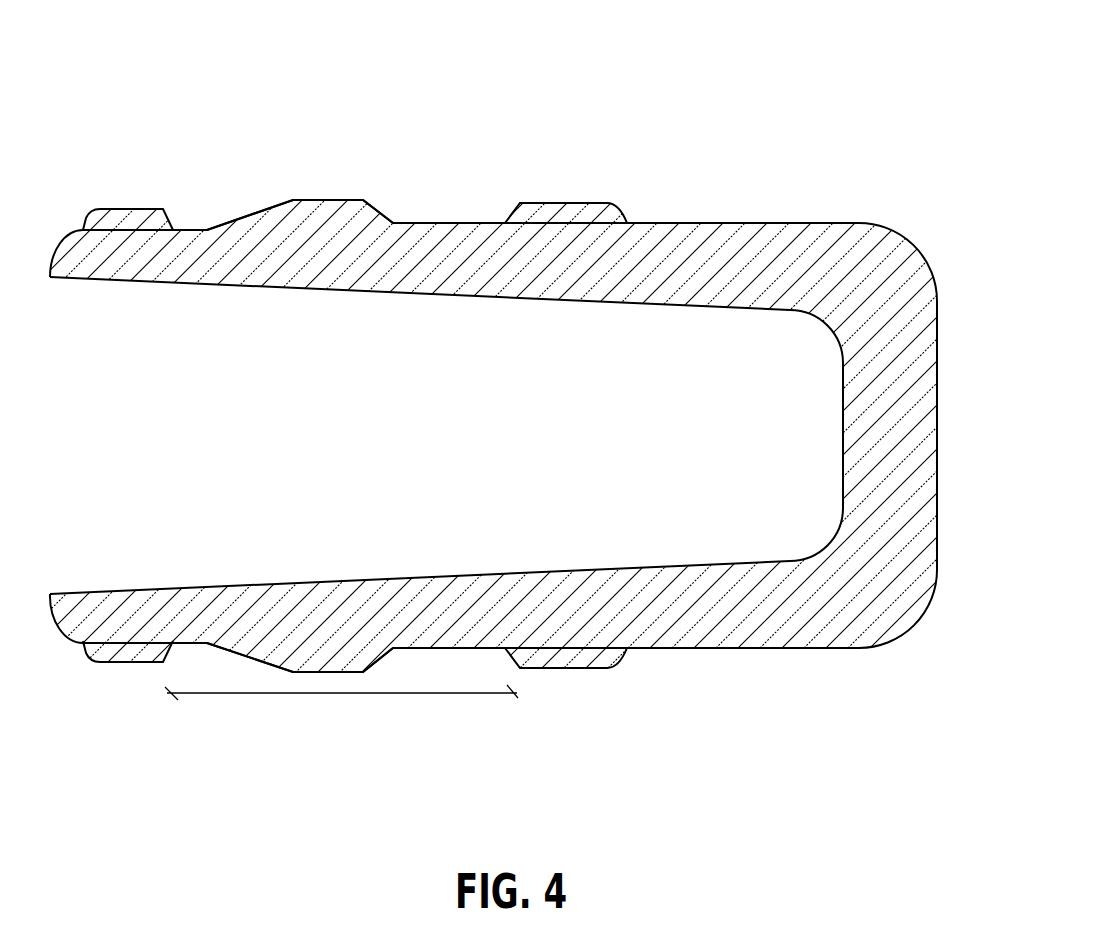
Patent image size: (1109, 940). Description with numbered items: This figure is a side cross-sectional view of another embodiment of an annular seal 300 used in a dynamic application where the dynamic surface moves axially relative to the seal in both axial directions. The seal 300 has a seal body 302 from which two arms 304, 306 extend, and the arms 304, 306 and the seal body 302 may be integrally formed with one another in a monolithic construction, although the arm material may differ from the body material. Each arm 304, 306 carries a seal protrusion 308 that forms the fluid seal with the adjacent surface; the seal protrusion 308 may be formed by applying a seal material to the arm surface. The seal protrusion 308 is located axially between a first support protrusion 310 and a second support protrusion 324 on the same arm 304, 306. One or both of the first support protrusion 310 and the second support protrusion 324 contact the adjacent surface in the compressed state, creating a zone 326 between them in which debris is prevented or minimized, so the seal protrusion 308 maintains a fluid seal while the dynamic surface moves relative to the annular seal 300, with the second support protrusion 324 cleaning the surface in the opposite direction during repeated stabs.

The annular seal 300 is at (554, 404).
The seal body 302 is at (843, 435).
The arm 304 is at (420, 231).
The arm 306 is at (458, 578).
The seal protrusion 308 is at (322, 213).
The first support protrusion 310 is at (553, 215).
The second support protrusion 324 is at (113, 210).
The zone 326 is at (322, 693).